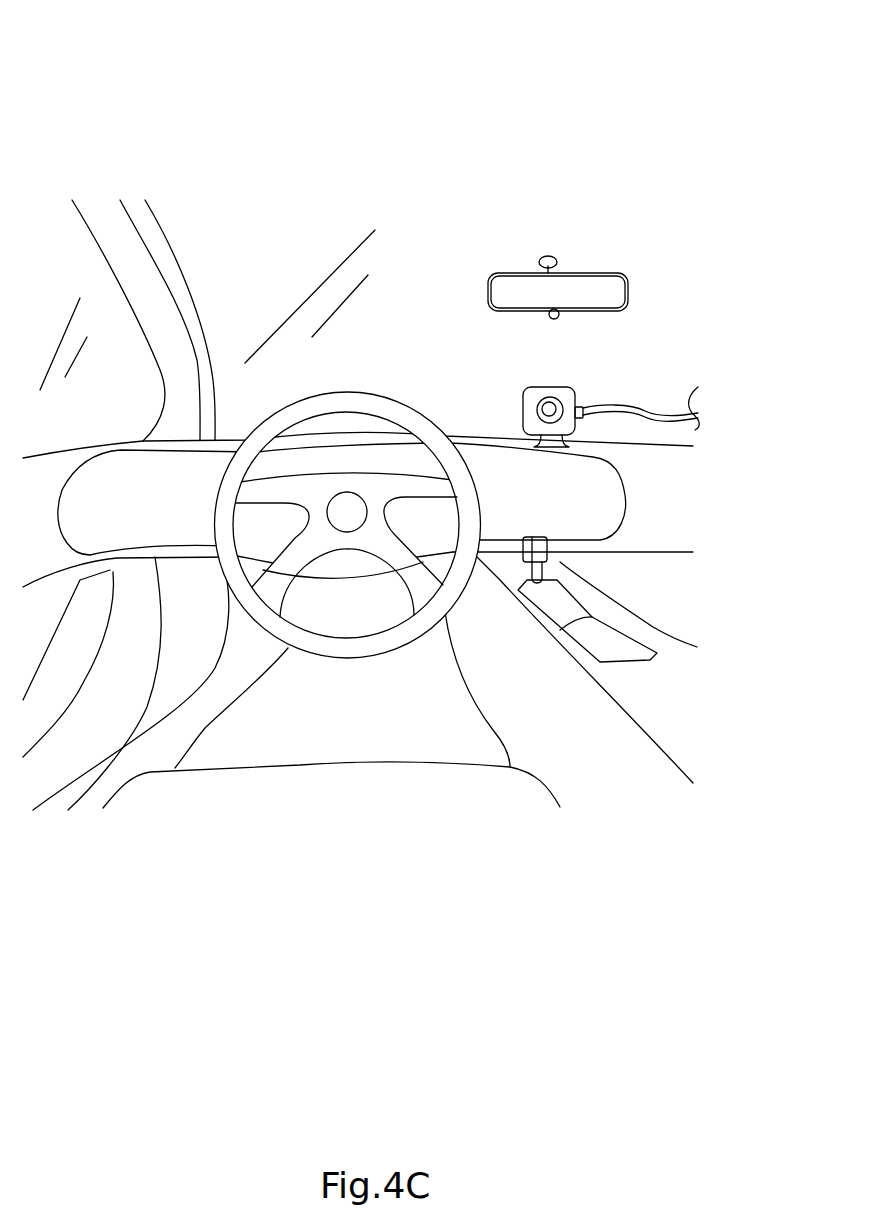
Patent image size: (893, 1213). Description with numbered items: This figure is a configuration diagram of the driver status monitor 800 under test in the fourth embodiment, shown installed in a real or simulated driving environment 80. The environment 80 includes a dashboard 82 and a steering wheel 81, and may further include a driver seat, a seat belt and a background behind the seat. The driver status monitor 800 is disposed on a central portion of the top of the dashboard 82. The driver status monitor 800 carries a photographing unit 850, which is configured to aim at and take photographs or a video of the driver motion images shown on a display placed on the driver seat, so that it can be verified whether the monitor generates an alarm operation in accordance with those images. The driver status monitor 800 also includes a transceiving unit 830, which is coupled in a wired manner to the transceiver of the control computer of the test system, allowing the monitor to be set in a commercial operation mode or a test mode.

The driving environment 80 is at (176, 150).
The steering wheel 81 is at (317, 407).
The dashboard 82 is at (660, 535).
The driver status monitor 800 is at (523, 398).
The transceiving unit 830 is at (583, 398).
The photographing unit 850 is at (523, 416).